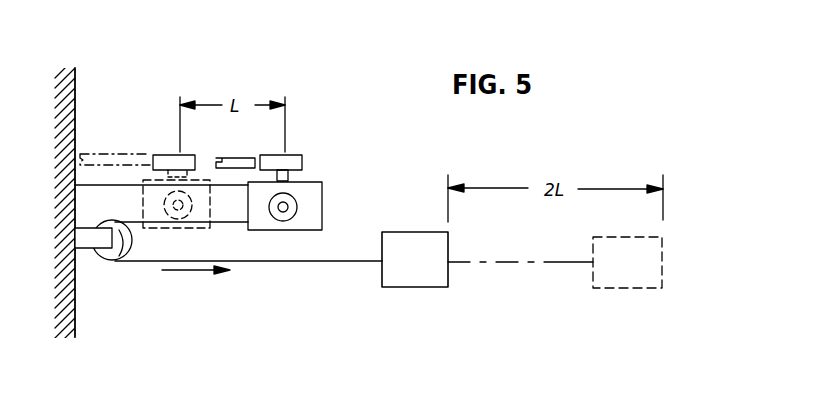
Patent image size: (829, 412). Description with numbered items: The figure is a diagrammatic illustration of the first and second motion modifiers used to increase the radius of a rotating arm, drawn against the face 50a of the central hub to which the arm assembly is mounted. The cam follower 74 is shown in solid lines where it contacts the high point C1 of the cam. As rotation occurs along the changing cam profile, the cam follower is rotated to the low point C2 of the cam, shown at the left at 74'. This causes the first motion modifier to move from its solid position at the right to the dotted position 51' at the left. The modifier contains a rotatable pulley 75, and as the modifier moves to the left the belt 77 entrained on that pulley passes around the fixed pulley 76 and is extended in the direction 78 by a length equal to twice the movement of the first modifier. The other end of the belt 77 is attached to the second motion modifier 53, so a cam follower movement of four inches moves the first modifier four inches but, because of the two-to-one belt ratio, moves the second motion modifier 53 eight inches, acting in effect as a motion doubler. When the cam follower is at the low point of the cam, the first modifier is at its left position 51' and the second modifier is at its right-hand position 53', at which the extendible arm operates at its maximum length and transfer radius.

The face of central hub 50a is at (75, 90).
The cam follower 74 is at (205, 133).
The cam follower at low point 74' is at (183, 151).
The high point of cam C1 is at (258, 153).
The low point of cam C2 is at (153, 151).
The belt 77 is at (102, 186).
The first motion modifier in dotted position 51' is at (199, 215).
The rotatable pulley 75 is at (287, 217).
The fixed pulley 76 is at (120, 254).
The direction of belt extension 78 is at (173, 272).
The second motion modifier 53 is at (487, 273).
The second motion modifier in right-hand position 53' is at (666, 275).